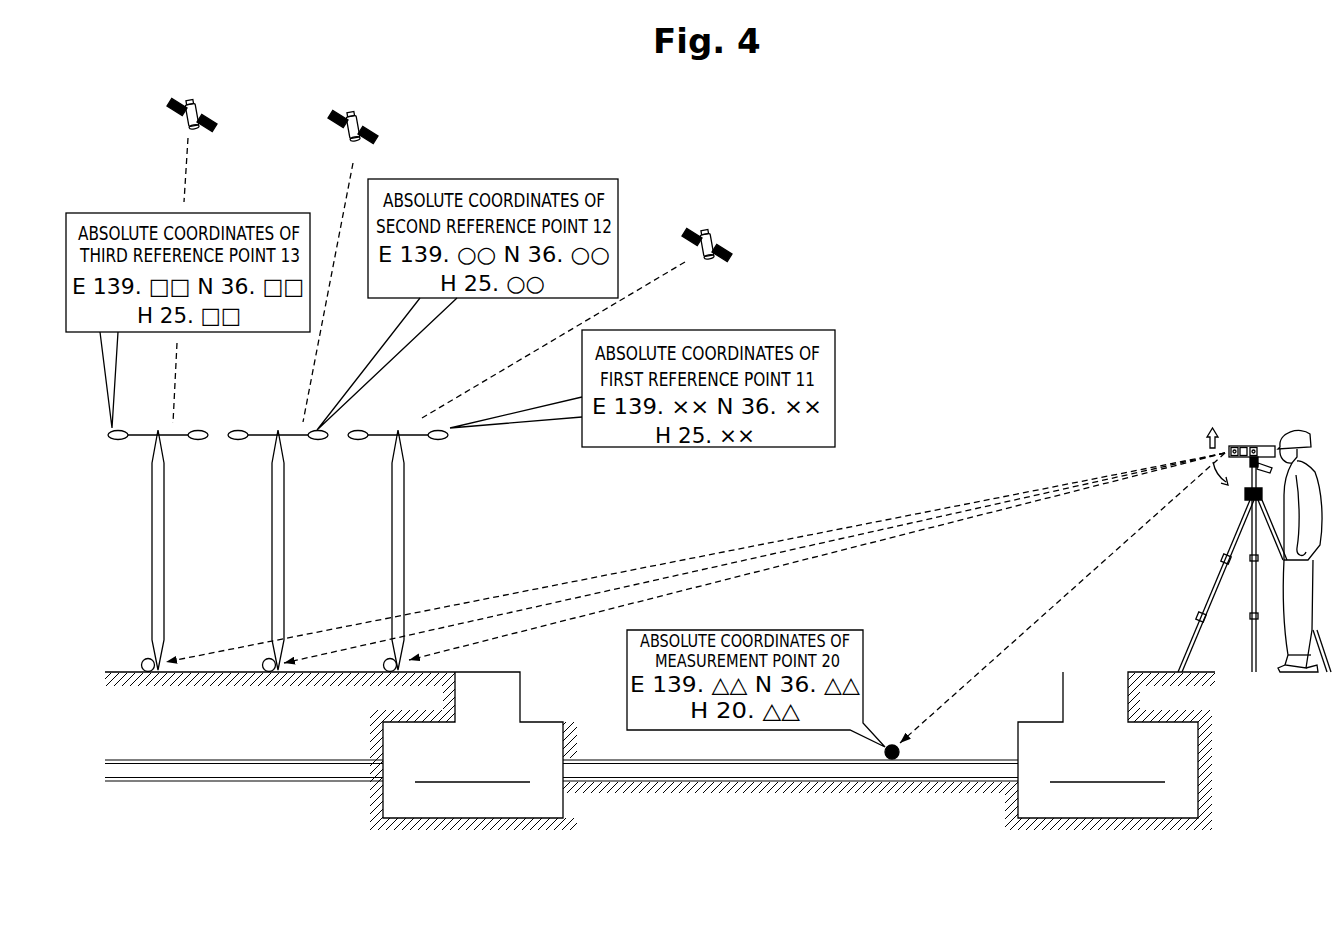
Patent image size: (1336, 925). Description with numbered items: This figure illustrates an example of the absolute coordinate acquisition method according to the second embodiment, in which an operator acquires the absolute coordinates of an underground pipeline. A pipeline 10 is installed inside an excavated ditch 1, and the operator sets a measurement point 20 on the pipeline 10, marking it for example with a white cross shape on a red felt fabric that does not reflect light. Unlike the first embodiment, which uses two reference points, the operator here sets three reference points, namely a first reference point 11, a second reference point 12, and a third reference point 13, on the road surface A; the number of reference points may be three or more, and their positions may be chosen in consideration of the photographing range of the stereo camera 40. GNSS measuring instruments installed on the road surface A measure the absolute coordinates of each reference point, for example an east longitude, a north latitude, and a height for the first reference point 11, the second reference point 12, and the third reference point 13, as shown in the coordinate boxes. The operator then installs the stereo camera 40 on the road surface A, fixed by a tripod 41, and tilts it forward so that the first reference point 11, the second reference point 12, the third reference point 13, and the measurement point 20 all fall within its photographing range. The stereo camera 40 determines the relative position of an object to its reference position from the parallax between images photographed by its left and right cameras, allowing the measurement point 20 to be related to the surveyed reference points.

The excavated ditch 1 is at (575, 692).
The pipeline 10 is at (767, 783).
The first reference point 11 is at (386, 672).
The second reference point 12 is at (268, 672).
The third reference point 13 is at (143, 660).
The measurement point 20 is at (890, 745).
The stereo camera 40 is at (1265, 443).
The tripod 41 is at (1218, 570).
The road surface A is at (215, 670).